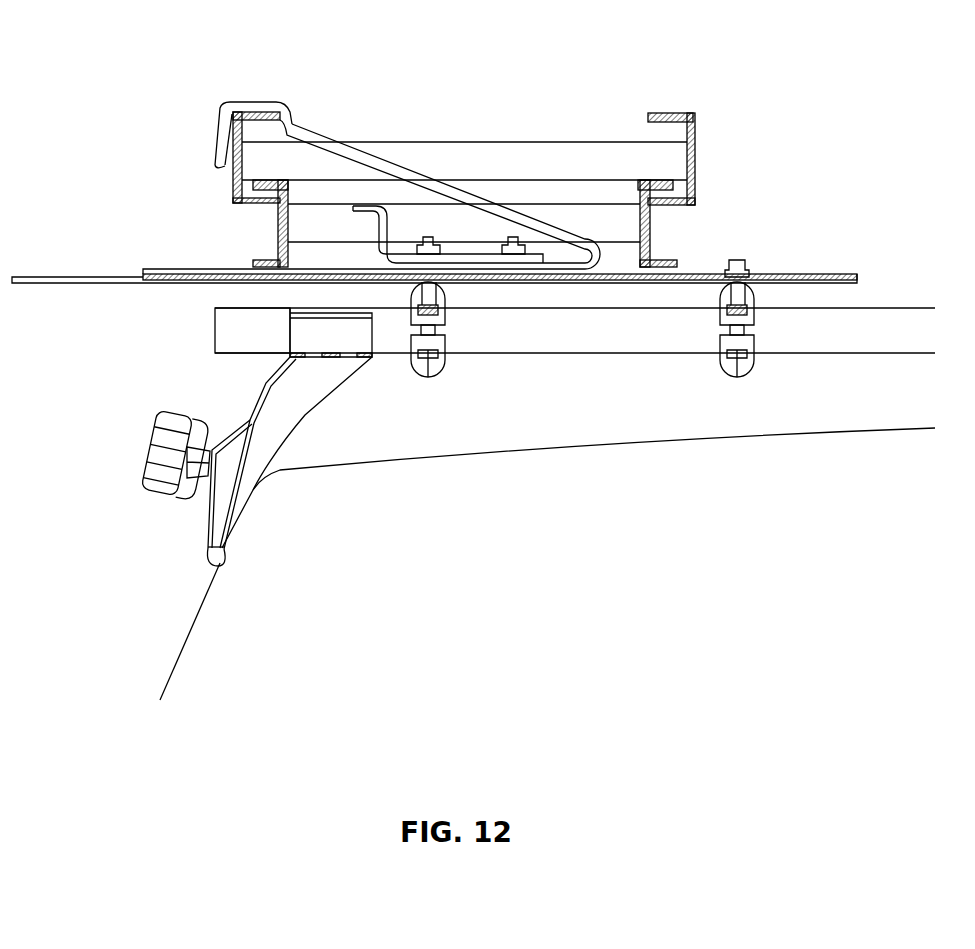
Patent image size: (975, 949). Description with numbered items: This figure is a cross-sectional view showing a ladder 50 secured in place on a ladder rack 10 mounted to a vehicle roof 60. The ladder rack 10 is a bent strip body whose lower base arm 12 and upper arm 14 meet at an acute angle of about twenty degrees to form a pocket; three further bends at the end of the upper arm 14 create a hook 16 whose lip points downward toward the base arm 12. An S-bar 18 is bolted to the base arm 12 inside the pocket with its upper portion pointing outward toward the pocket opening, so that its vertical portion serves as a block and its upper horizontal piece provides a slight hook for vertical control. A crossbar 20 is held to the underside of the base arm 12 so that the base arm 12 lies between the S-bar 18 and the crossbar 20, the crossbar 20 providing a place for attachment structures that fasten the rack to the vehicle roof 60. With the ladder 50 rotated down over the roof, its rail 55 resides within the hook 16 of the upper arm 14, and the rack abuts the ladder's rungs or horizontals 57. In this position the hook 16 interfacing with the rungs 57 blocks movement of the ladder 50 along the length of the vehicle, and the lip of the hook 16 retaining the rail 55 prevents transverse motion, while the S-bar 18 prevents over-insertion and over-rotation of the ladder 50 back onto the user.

The ladder 50 is at (268, 66).
The ladder rack 10 is at (405, 160).
The hook 16 is at (247, 100).
The upper arm 14 is at (307, 133).
The S-bar 18 is at (387, 220).
The rungs 57 is at (598, 152).
The ladder rail 55 is at (697, 128).
The crossbar 20 is at (828, 276).
The base arm 12 is at (118, 283).
The vehicle roof 60 is at (192, 620).